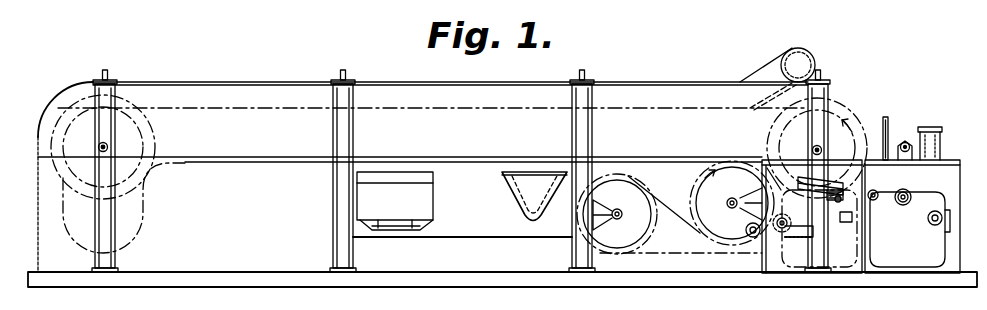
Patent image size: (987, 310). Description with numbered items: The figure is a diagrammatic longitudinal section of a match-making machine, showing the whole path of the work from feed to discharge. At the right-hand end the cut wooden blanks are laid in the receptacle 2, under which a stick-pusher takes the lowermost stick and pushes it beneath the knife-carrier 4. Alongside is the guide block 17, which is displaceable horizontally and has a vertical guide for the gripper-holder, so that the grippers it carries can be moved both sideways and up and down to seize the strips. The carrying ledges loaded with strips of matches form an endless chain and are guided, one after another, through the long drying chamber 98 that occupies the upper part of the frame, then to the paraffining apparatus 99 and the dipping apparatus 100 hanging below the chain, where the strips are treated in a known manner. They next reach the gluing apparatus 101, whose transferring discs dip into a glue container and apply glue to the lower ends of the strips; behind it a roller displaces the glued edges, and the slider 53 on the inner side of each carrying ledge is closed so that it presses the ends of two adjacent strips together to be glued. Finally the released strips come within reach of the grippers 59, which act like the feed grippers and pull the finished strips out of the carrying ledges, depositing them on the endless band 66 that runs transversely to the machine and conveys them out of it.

The receptacle 2 is at (942, 131).
The knife-carrier 4 is at (905, 141).
The guide block 17 is at (838, 188).
The slider 53 is at (746, 230).
The grippers 59 is at (838, 201).
The endless band 66 is at (846, 222).
The drying chamber 98 is at (400, 143).
The paraffining apparatus 99 is at (395, 201).
The dipping apparatus 100 is at (515, 203).
The gluing apparatus 101 is at (793, 235).